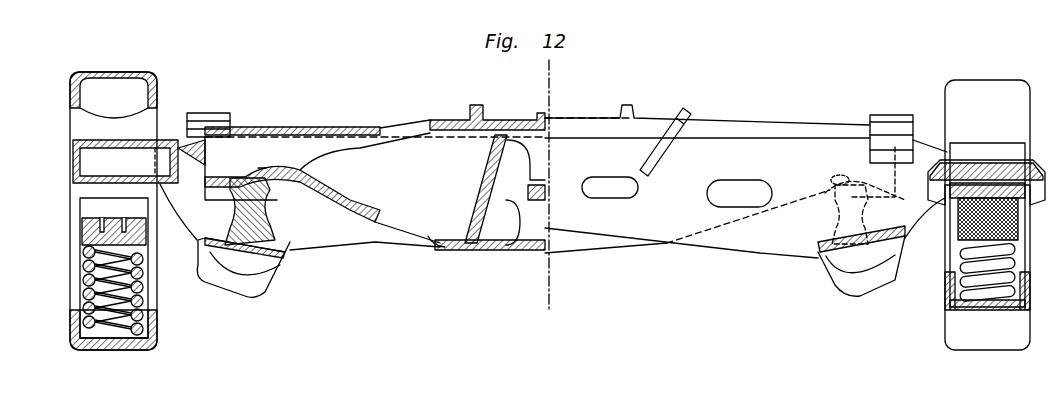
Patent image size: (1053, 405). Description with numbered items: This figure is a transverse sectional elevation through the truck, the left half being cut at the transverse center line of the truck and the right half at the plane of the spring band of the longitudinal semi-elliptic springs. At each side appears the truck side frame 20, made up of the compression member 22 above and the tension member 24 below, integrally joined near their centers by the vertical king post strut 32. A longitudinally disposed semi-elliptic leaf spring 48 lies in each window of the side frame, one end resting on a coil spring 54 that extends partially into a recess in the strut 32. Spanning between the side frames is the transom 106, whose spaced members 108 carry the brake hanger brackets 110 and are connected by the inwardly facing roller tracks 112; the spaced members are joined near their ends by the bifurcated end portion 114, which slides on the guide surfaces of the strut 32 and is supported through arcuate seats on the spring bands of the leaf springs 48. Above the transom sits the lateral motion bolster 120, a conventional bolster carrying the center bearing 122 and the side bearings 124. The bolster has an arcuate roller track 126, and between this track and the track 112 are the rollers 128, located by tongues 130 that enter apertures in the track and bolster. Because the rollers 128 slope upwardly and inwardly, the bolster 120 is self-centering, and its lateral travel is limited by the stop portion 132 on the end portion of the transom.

The truck side frame 20 is at (125, 72).
The compression member 22 is at (95, 72).
The tension member 24 is at (158, 335).
The king post strut 32 is at (78, 124).
The semi-elliptic leaf spring 48 is at (92, 220).
The coil spring 54 is at (88, 264).
The transom 106 is at (360, 240).
The spaced members 108 is at (600, 250).
The brake hanger brackets 110 is at (218, 113).
The roller tracks 112 is at (275, 273).
The end portion 114 is at (160, 140).
The lateral motion bolster 120 is at (455, 215).
The center bearing 122 is at (490, 120).
The side bearings 124 is at (282, 127).
The arcuate roller track 126 is at (295, 183).
The rollers 128 is at (245, 220).
The tongues 130 is at (260, 180).
The stop portion 132 is at (185, 170).